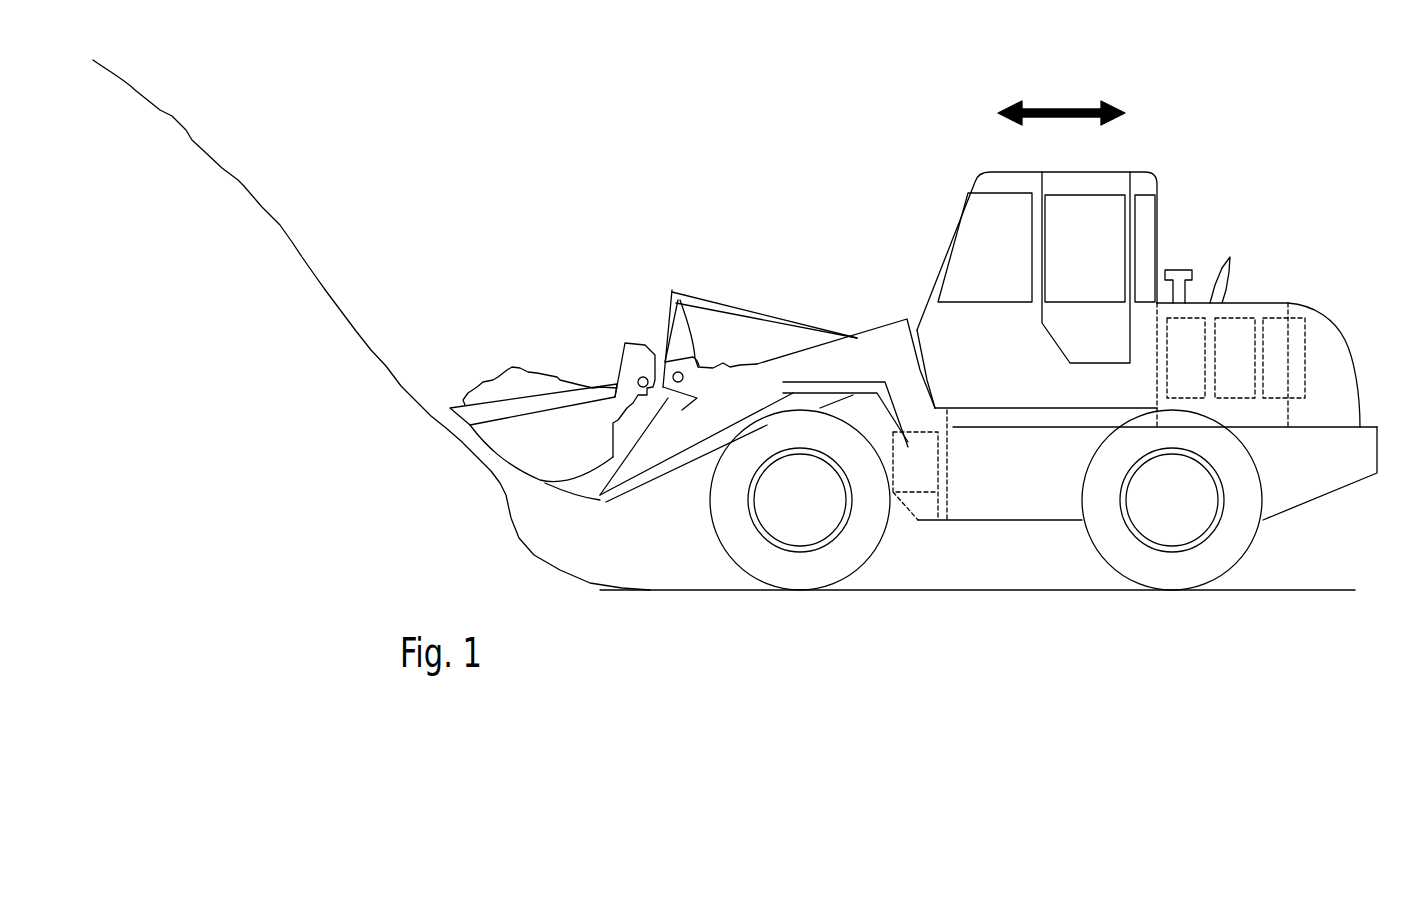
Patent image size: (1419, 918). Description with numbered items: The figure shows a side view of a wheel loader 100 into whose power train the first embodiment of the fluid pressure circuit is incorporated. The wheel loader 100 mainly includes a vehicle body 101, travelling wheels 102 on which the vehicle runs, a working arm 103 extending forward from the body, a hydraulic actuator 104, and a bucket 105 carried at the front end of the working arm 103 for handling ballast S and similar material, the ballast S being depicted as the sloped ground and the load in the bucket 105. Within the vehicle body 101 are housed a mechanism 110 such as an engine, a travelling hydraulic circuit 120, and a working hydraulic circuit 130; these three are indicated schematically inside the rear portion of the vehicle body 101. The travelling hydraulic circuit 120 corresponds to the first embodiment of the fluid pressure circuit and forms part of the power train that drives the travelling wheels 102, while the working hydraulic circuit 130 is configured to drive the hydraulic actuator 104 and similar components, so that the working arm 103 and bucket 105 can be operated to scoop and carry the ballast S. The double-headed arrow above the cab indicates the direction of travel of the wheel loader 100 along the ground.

The ballast S is at (240, 180).
The wheel loader 100 is at (1192, 166).
The vehicle body 101 is at (1337, 332).
The travelling wheels 102 is at (807, 580).
The working arm 103 is at (745, 380).
The hydraulic actuator 104 is at (846, 360).
The bucket 105 is at (527, 368).
The mechanism 110 is at (1195, 317).
The travelling hydraulic circuit 120 is at (1240, 313).
The working hydraulic circuit 130 is at (1285, 310).